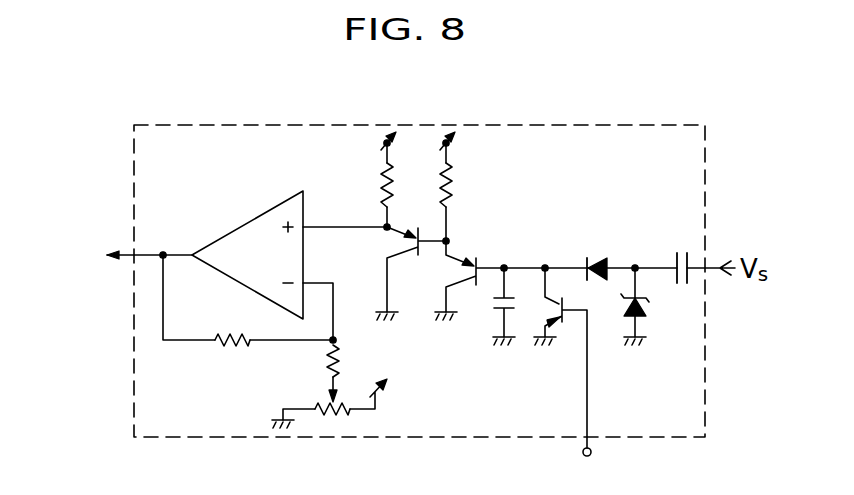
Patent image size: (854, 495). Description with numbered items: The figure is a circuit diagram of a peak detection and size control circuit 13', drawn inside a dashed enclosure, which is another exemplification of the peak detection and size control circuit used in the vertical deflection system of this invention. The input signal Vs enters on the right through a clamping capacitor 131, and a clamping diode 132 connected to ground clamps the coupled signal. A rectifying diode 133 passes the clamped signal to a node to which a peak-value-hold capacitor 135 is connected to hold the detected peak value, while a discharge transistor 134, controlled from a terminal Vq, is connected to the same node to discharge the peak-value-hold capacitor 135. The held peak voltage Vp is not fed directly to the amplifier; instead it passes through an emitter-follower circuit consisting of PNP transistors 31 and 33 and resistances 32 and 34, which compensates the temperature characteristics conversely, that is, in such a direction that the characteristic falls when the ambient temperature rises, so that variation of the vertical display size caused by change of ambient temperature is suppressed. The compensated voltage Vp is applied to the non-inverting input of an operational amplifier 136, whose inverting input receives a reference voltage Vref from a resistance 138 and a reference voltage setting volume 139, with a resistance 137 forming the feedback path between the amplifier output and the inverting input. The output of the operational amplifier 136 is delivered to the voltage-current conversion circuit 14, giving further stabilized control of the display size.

The peak detection and size control circuit 13' is at (448, 292).
The voltage-current conversion circuit 14 is at (115, 254).
The operational amplifier 136 is at (272, 208).
The resistance 137 is at (236, 346).
The resistance 138 is at (313, 378).
The reference voltage setting volume 139 is at (352, 411).
The resistance 34 is at (381, 190).
The resistance 32 is at (448, 190).
The PNP transistor 33 is at (396, 242).
The PNP transistor 31 is at (474, 259).
The peak-value-hold capacitor 135 is at (500, 322).
The discharge transistor 134 is at (545, 350).
The rectifying diode 133 is at (598, 258).
The clamping diode 132 is at (646, 310).
The clamping capacitor 131 is at (676, 255).